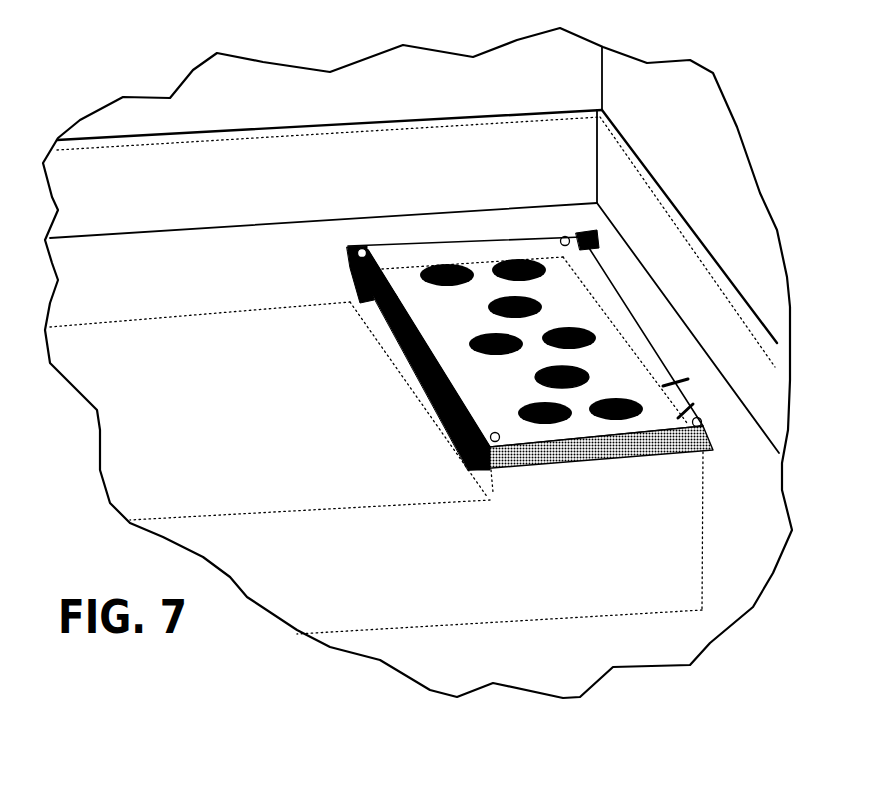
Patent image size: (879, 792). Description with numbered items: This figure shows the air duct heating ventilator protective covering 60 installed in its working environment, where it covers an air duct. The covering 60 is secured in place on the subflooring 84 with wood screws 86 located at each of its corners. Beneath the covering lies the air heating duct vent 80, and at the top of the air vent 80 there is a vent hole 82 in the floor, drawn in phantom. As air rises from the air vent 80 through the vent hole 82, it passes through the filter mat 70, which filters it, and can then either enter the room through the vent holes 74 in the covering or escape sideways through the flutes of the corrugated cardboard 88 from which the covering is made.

The air duct heating ventilator protective covering 60 is at (516, 360).
The filter mat 70 is at (447, 263).
The vent holes 74 is at (590, 372).
The air vent 80 is at (683, 497).
The vent hole 82 is at (486, 258).
The subflooring 84 is at (263, 276).
The wood screws 86 is at (360, 248).
The corrugated cardboard 88 is at (411, 368).